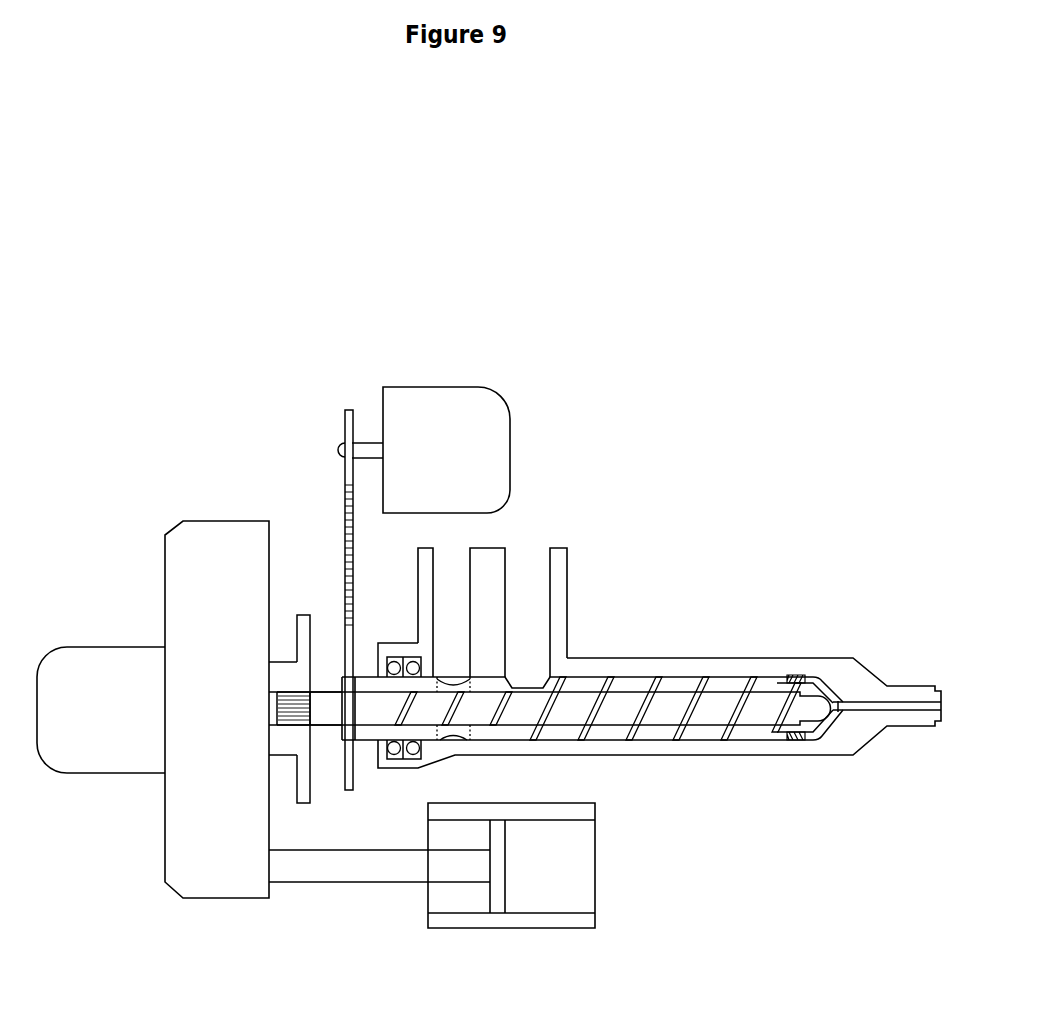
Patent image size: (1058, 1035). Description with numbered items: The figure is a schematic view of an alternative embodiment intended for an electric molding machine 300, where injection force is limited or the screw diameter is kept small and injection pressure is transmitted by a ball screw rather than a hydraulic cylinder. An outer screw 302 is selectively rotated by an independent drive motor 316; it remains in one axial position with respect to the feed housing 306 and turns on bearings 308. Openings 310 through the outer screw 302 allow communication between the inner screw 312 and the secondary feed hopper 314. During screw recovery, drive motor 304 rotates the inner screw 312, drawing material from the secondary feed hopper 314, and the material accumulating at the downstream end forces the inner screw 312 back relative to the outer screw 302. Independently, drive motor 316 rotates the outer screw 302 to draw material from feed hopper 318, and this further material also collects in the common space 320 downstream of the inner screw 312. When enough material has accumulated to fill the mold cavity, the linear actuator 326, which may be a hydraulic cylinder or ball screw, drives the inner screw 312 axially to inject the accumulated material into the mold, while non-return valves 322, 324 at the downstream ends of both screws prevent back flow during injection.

The electric molding machine 300 is at (489, 682).
The outer screw 302 is at (765, 755).
The drive motor 304 is at (141, 647).
The feed housing 306 is at (568, 637).
The bearings 308 is at (396, 753).
The openings 310 is at (455, 682).
The inner screw 312 is at (668, 690).
The secondary feed hopper 314 is at (448, 568).
The independent drive motor 316 is at (441, 387).
The feed hopper 318 is at (523, 573).
The common space 320 is at (840, 713).
The non-return valve 322 is at (802, 735).
The non-return valve 324 is at (826, 690).
The linear actuator 326 is at (460, 930).